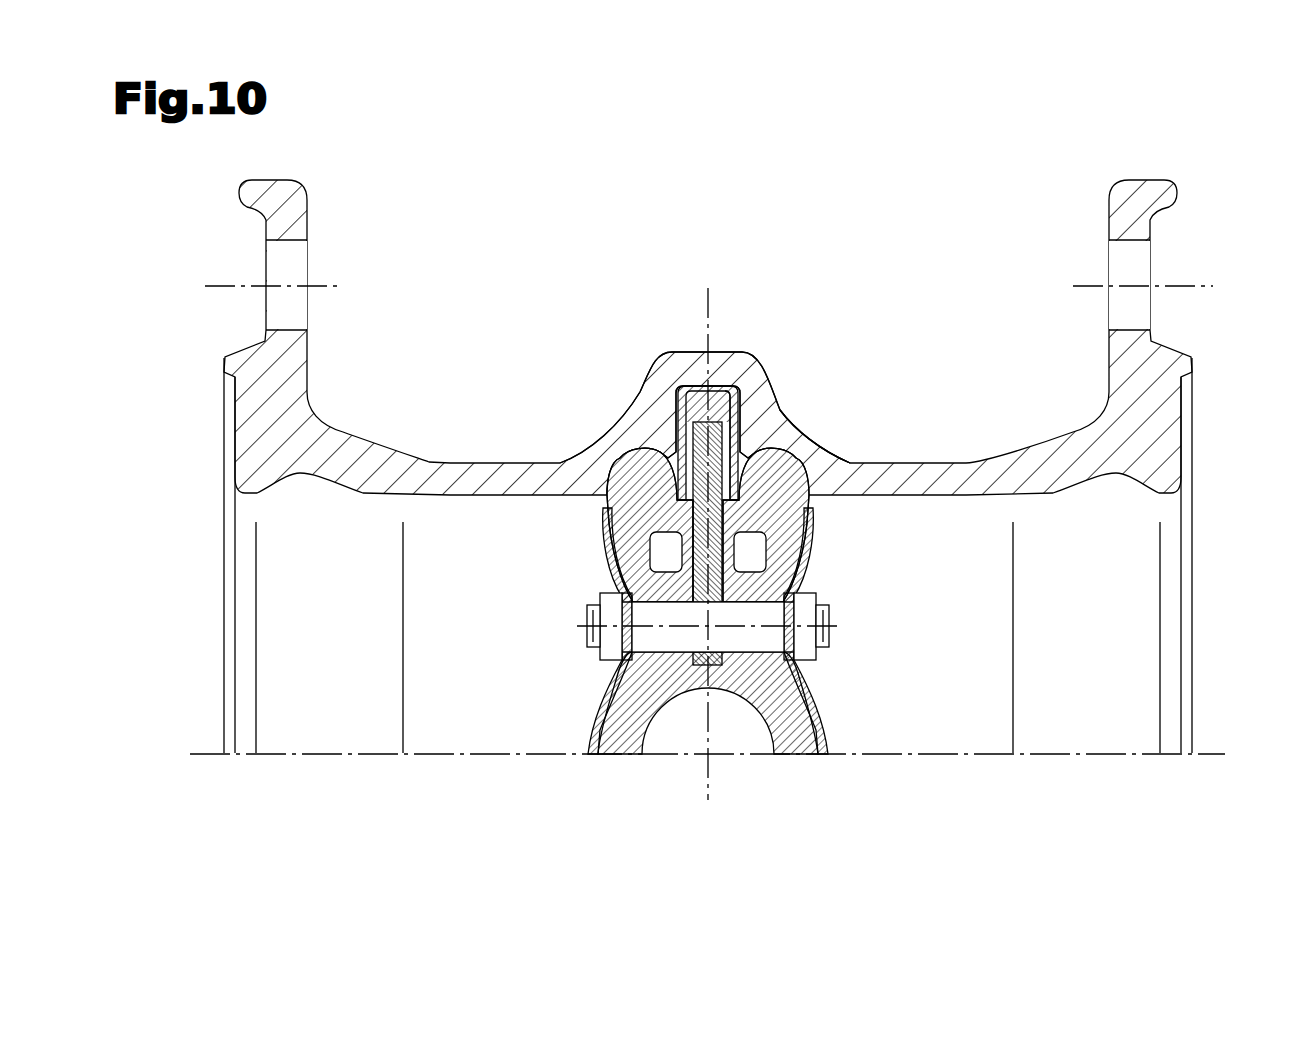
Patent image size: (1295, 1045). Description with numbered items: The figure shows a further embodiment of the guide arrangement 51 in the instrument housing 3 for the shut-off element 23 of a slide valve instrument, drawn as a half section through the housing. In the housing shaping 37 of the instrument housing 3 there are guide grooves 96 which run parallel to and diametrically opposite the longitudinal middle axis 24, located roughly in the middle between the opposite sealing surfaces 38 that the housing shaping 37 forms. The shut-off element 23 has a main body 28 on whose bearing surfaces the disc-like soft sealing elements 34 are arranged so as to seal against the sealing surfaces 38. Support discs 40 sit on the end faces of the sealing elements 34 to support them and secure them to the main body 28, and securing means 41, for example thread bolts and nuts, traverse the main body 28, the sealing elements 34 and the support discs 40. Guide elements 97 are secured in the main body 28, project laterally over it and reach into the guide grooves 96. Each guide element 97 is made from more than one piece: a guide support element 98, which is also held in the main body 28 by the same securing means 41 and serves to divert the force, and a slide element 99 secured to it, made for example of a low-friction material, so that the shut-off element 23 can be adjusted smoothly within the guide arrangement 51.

The instrument housing 3 is at (902, 480).
The shut-off element 23 is at (990, 663).
The longitudinal middle axis 24 is at (707, 762).
The main body 28 is at (655, 700).
The sealing element 34 is at (645, 460).
The housing shaping 37 is at (620, 383).
The sealing surface 38 is at (806, 462).
The support disc 40 is at (814, 547).
The securing means 41 is at (812, 636).
The guide arrangement 51 is at (750, 352).
The guide groove 96 is at (683, 385).
The guide element 97 is at (692, 350).
The guide support element 98 is at (736, 402).
The slide element 99 is at (758, 432).